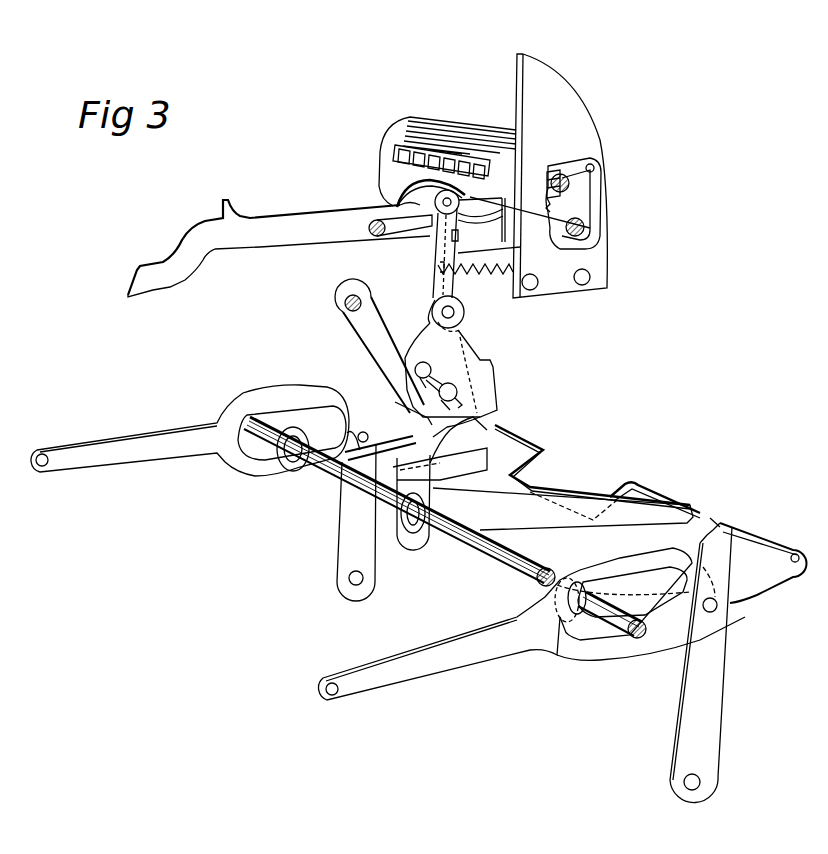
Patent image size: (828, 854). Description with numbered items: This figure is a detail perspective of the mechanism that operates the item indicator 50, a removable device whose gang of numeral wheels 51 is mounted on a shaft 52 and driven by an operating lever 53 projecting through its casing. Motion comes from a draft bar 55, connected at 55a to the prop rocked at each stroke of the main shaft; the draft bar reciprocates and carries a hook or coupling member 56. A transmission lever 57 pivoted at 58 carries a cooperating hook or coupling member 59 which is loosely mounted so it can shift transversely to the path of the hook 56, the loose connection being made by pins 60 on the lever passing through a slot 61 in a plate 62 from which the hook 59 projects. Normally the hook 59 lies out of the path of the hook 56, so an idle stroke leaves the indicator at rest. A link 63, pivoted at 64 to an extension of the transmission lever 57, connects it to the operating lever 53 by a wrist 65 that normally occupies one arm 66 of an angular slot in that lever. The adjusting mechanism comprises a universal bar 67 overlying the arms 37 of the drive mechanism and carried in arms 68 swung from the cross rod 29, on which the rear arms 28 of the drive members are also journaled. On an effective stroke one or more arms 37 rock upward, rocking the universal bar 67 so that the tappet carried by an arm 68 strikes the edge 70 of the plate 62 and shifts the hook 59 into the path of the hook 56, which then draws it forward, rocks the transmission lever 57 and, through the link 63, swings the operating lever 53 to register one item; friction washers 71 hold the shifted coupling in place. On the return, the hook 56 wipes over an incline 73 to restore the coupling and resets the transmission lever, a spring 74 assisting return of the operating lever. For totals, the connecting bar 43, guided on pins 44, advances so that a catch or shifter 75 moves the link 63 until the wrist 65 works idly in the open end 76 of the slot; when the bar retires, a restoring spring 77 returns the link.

The rear arm 28 is at (335, 490).
The cross rod 29 is at (485, 560).
The arm of the drive mechanism 37 is at (563, 509).
The connecting bar 43 is at (279, 248).
The pin 44 is at (372, 238).
The item indicator 50 is at (405, 135).
The numeral wheel 51 is at (462, 150).
The shaft 52 is at (558, 175).
The operating lever 53 is at (512, 208).
The draft bar 55 is at (361, 542).
The connection of draft bar to prop 55a is at (333, 683).
The hook or coupling member 56 is at (405, 408).
The transmission lever 57 is at (400, 355).
The pivot 58 is at (348, 318).
The hook or coupling member 59 is at (350, 435).
The pin 60 is at (443, 373).
The slot 61 is at (463, 403).
The plate 62 is at (493, 390).
The link 63 is at (455, 246).
The pivot 64 is at (458, 312).
The wrist 65 is at (486, 202).
The arm of angular slot 66 is at (398, 198).
The universal bar 67 is at (648, 482).
The arm 68 is at (457, 452).
The edge of plate 70 is at (494, 437).
The friction washer 71 is at (437, 401).
The incline 73 is at (390, 443).
The spring 74 is at (560, 201).
The catch or shifter 75 is at (462, 235).
The open end of angular slot 76 is at (400, 205).
The restoring spring 77 is at (480, 272).